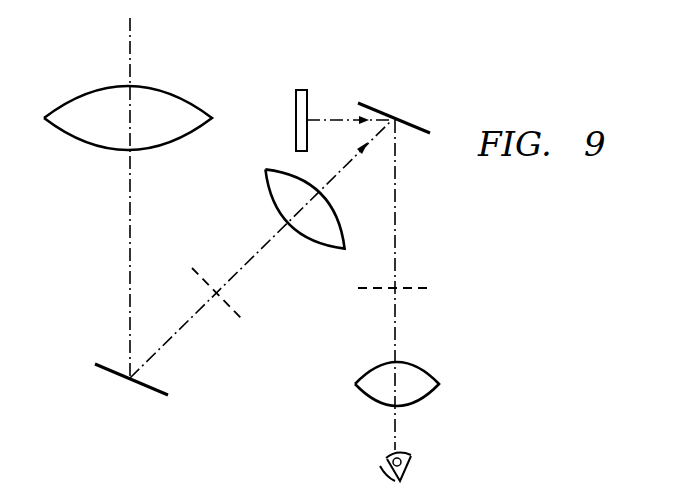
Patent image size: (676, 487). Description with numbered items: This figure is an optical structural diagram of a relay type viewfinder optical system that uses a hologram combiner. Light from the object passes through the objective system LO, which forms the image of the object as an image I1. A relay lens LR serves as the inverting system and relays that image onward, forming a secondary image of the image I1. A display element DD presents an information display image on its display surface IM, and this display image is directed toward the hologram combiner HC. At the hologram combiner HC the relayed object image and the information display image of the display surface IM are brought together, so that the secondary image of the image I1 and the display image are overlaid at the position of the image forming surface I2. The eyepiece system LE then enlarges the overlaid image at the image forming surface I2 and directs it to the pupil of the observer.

The objective system LO is at (87, 93).
The display element DD is at (296, 101).
The display surface IM is at (310, 99).
The hologram combiner HC is at (405, 124).
The relay lens LR is at (264, 182).
The image I1 is at (230, 310).
The image forming surface I2 is at (407, 287).
The eyepiece system LE is at (419, 366).